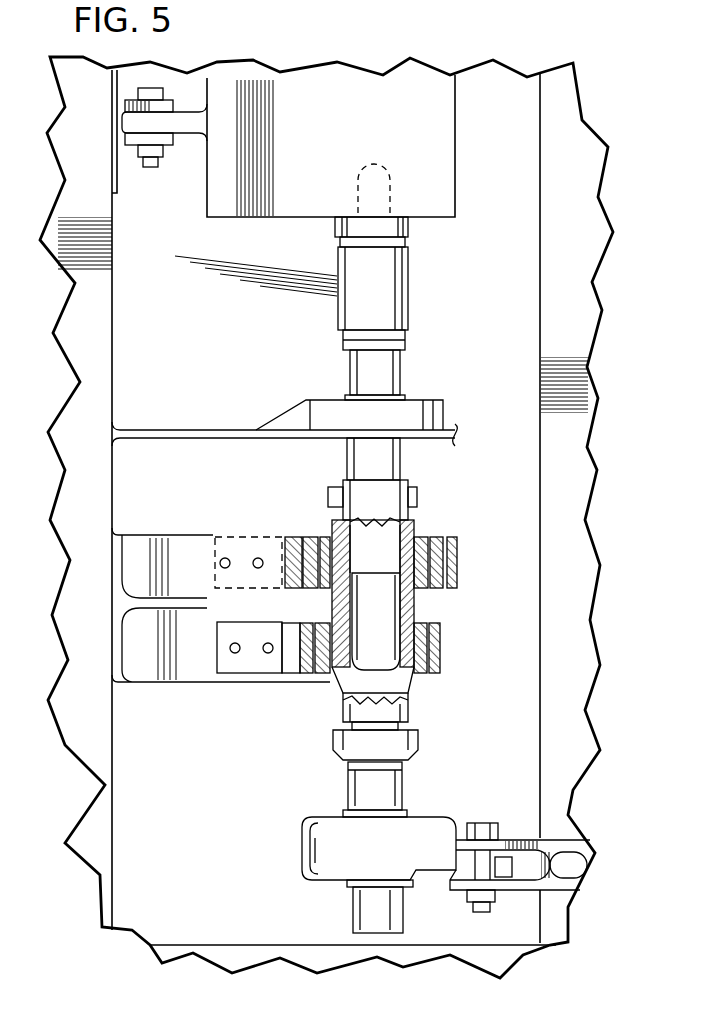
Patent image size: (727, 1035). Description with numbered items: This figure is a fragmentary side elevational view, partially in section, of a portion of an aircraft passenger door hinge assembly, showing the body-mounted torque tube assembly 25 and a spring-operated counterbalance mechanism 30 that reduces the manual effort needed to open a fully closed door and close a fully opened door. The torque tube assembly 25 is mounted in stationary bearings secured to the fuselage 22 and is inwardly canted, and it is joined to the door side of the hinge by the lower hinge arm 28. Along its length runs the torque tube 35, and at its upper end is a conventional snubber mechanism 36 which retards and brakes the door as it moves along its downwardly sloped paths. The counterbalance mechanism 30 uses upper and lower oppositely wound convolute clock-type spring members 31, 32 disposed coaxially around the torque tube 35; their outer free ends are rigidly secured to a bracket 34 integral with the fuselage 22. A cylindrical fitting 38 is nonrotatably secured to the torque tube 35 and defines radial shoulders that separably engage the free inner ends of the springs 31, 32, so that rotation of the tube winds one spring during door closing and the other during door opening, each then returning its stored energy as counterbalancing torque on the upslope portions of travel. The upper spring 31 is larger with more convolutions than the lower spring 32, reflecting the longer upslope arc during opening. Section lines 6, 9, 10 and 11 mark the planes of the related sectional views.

The fuselage 22 is at (560, 308).
The snubber mechanism 36 is at (438, 172).
The body-mounted torque tube assembly 25 is at (438, 310).
The torque tube 35 is at (383, 382).
The bracket 34 is at (182, 684).
The cylindrical fitting 38 is at (397, 500).
The upper convolute spring member 31 is at (427, 540).
The counterbalance mechanism 30 is at (313, 512).
The lower convolute spring member 32 is at (440, 655).
The lower hinge arm 28 is at (548, 890).
The section line 6- 6 is at (373, 172).
The section line 9- 9 is at (322, 687).
The section line 10- 10 is at (303, 603).
The section line 11- 11 is at (300, 527).